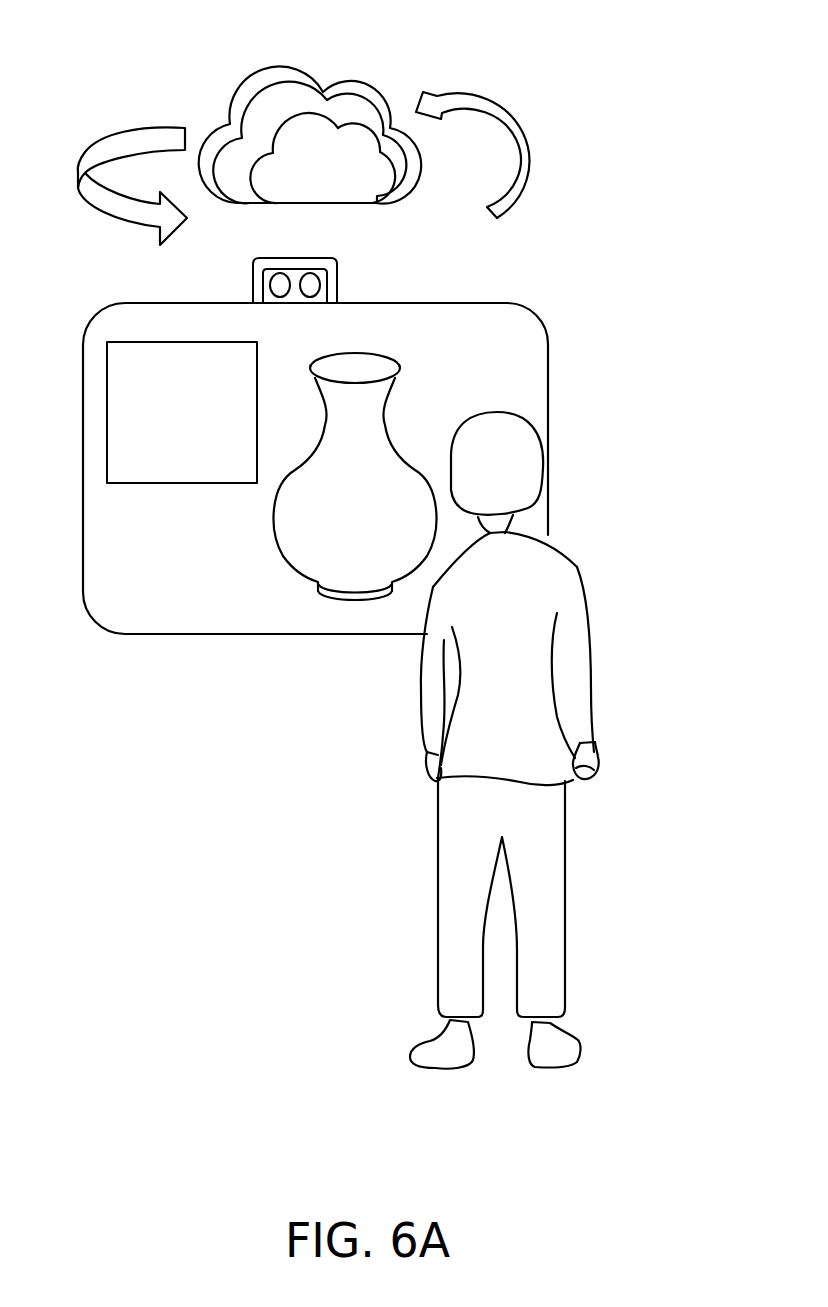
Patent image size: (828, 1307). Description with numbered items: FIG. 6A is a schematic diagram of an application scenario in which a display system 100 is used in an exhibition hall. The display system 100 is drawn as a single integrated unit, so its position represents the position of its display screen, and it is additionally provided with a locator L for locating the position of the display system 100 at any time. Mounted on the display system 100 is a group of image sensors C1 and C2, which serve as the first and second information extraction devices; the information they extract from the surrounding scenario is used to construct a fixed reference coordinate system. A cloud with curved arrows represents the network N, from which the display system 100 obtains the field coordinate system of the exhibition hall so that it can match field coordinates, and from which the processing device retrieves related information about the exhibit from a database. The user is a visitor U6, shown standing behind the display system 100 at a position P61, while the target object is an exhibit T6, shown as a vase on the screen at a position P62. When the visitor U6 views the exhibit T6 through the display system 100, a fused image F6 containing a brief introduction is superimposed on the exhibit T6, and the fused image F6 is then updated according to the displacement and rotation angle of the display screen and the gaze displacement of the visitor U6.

The network N is at (345, 80).
The locator L is at (295, 261).
The image sensor C1 is at (322, 287).
The image sensor C2 is at (270, 276).
The exhibit T6 is at (377, 353).
The display system 100 is at (550, 382).
The fused image F6 is at (180, 485).
The visitor U6 is at (583, 580).
The user position P61 is at (502, 1132).
The object position P62 is at (251, 684).